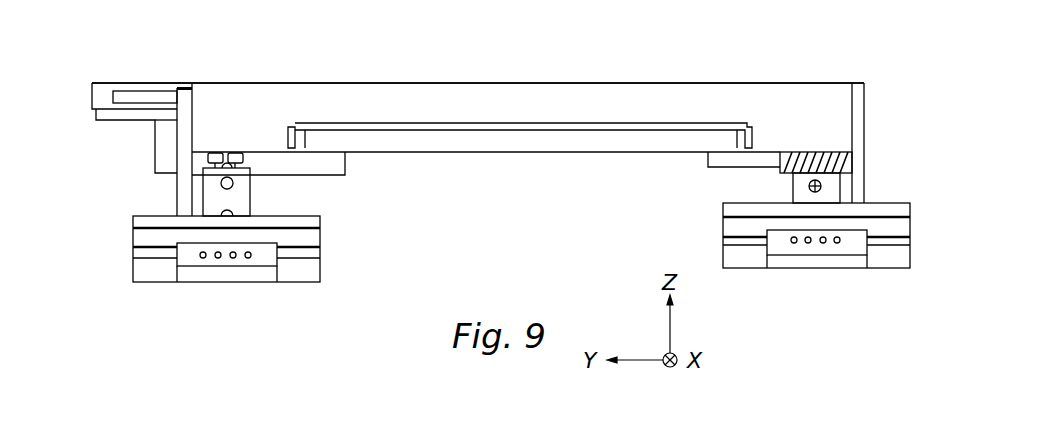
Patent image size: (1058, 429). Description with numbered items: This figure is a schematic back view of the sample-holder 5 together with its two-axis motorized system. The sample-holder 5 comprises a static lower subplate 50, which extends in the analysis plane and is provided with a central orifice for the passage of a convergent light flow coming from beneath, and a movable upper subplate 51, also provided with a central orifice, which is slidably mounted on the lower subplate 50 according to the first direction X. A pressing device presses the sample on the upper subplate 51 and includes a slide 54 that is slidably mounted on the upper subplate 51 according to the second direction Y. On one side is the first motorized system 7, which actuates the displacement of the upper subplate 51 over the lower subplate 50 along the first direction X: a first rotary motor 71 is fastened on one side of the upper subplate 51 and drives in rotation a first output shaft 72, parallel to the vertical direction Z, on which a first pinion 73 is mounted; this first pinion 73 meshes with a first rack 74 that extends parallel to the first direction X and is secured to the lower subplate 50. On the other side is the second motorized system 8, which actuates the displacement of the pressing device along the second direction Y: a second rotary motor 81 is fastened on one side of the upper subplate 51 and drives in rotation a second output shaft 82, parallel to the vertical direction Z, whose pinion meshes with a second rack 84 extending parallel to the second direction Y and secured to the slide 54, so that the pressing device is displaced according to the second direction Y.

The sample-holder 5 is at (832, 68).
The lower subplate 50 is at (500, 140).
The upper subplate 51 is at (370, 102).
The slide 54 is at (105, 93).
The second rack 84 is at (115, 121).
The second output shaft 82 is at (215, 197).
The second rotary motor 81 is at (155, 240).
The second motorized system 8 is at (165, 292).
The first rack 74 is at (762, 150).
The first pinion 73 is at (838, 163).
The first output shaft 72 is at (832, 184).
The first rotary motor 71 is at (742, 256).
The first motorized system 7 is at (884, 283).